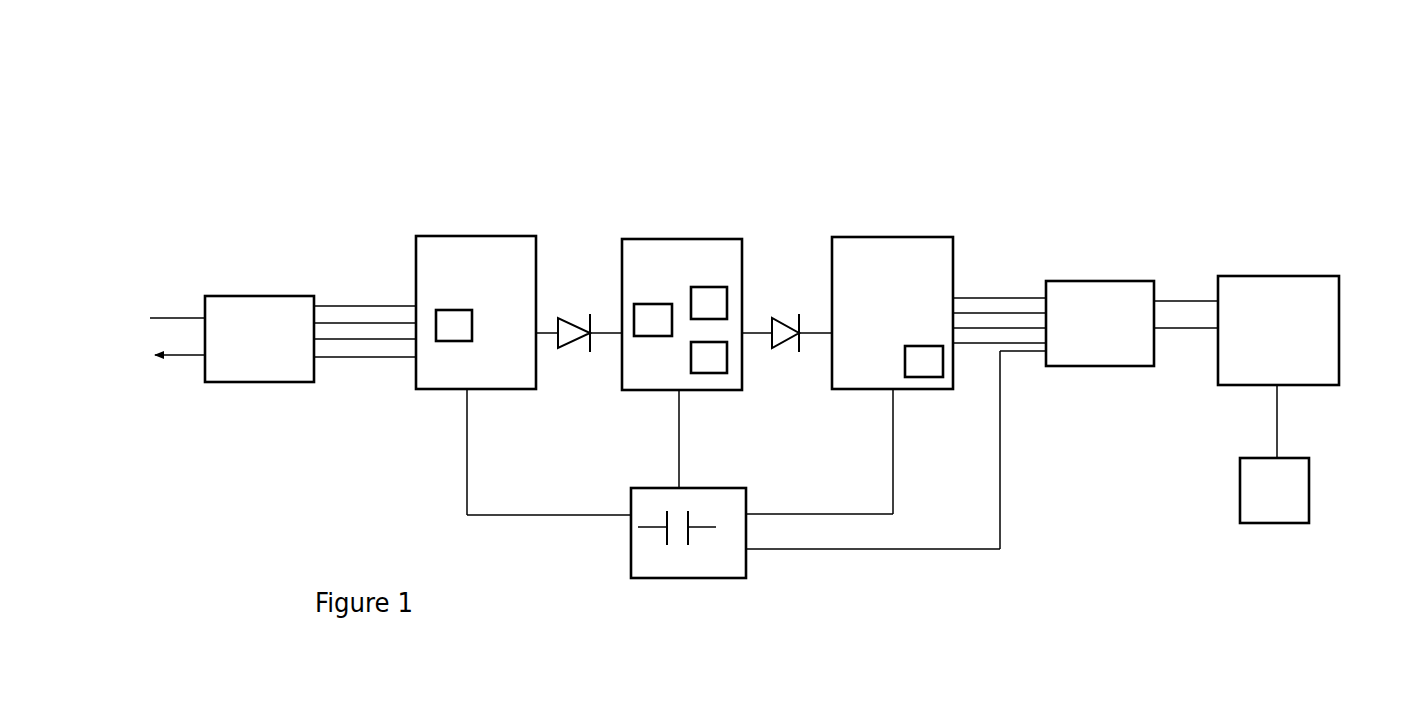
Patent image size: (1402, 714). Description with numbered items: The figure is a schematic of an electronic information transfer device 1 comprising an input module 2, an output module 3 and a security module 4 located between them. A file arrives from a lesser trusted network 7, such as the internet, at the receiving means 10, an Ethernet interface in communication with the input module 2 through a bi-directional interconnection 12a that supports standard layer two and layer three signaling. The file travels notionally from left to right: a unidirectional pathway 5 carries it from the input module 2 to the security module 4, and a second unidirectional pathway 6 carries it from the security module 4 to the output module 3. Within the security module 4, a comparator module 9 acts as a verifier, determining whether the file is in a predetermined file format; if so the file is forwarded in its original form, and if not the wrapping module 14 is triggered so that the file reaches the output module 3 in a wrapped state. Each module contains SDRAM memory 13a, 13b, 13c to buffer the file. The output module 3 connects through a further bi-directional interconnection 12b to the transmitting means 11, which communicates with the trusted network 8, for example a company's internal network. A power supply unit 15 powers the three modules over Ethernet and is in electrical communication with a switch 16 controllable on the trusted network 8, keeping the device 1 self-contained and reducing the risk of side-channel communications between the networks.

The device 1 is at (300, 110).
The input module 2 is at (453, 278).
The output module 3 is at (899, 288).
The security module 4 is at (672, 278).
The unidirectional pathway 5 is at (571, 303).
The second unidirectional pathway 6 is at (783, 297).
The lesser trusted network 7 is at (233, 310).
The trusted network 8 is at (1295, 482).
The comparator module 9 is at (713, 360).
The receiving means 10 is at (282, 372).
The transmitting means 11 is at (1089, 290).
The interconnection 12a is at (363, 293).
The interconnection 12b is at (998, 287).
The memory 13a is at (452, 338).
The memory 13b is at (652, 328).
The memory 13c is at (927, 368).
The wrapping module 14 is at (709, 302).
The power supply unit 15 is at (722, 563).
The switch 16 is at (1277, 298).